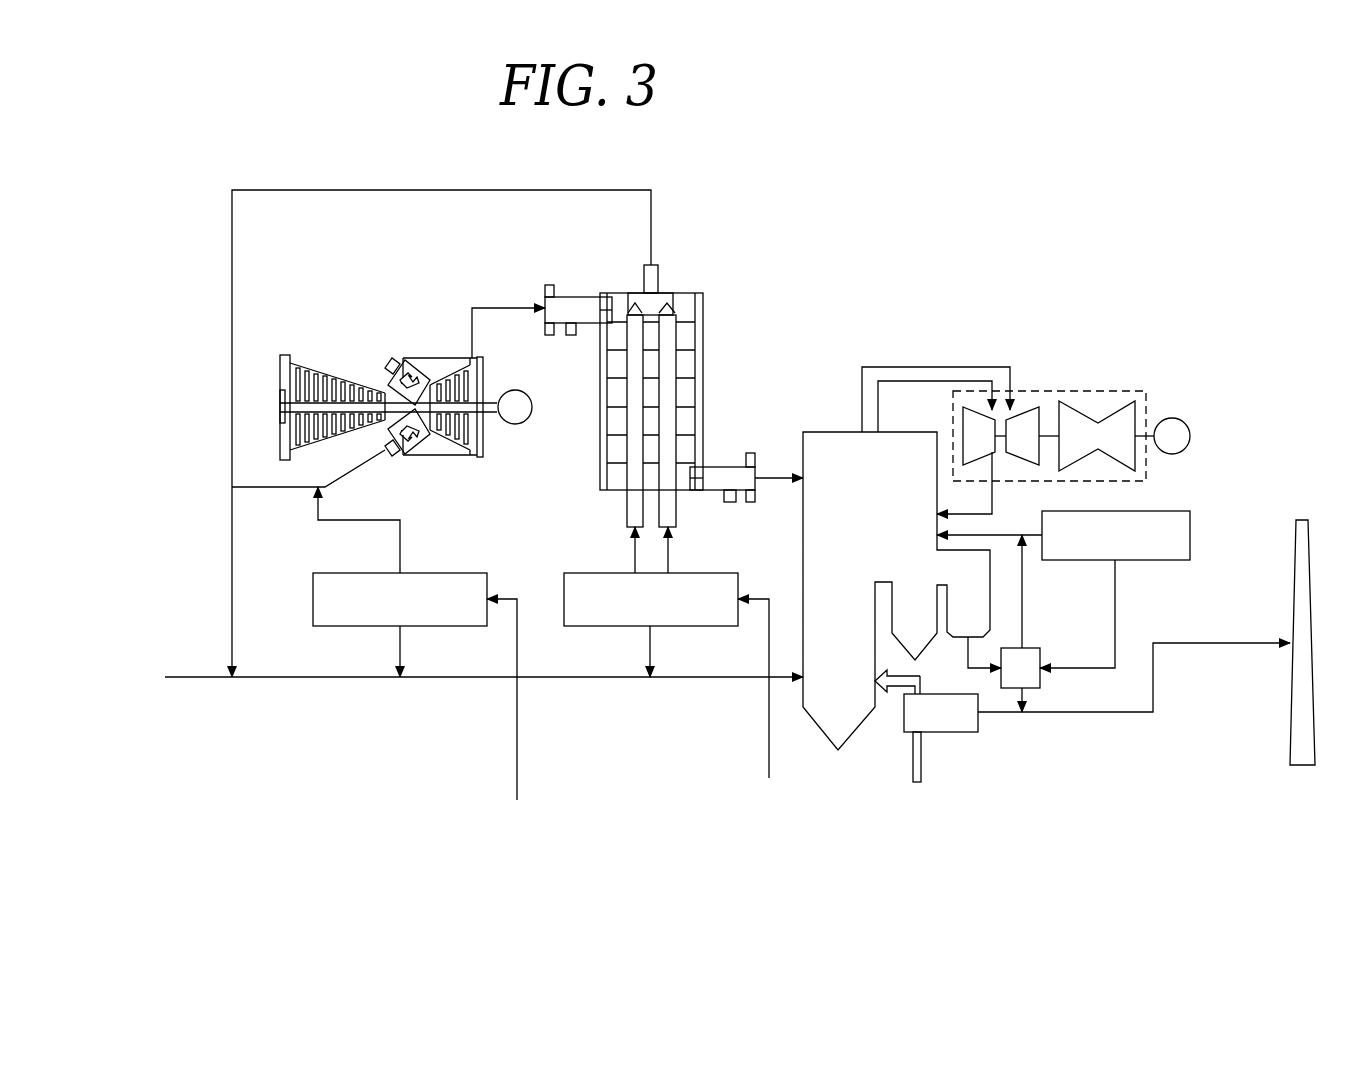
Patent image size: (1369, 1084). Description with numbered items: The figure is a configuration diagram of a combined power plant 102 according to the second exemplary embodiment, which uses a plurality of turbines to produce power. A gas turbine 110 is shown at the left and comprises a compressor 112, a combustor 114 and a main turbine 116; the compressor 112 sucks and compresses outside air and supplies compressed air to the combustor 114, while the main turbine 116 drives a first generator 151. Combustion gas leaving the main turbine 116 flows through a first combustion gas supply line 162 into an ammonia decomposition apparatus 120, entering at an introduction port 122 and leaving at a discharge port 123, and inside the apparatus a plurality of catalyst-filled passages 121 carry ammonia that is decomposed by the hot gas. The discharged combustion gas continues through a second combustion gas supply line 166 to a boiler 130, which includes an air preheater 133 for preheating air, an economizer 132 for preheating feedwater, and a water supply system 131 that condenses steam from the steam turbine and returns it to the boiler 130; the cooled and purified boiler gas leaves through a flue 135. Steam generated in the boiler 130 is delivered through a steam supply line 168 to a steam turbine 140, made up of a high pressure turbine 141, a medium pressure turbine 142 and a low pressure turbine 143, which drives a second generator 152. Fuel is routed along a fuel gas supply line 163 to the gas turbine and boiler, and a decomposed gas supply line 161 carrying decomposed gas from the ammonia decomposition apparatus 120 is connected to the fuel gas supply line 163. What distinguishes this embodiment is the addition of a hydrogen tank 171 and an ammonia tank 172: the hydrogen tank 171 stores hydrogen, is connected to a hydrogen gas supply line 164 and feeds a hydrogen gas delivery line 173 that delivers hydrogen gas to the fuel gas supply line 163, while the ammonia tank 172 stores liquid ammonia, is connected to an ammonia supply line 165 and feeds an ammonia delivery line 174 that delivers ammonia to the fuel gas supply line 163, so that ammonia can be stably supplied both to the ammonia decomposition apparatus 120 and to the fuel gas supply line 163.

The combined power plant 102 is at (960, 141).
The gas turbine 110 is at (386, 338).
The compressor 112 is at (331, 387).
The combustor 114 is at (425, 387).
The main turbine 116 is at (450, 455).
The ammonia decomposition apparatus 120 is at (712, 316).
The passage 121 is at (672, 364).
The introduction port 122 is at (581, 296).
The discharge port 123 is at (725, 467).
The boiler 130 is at (819, 412).
The water supply system 131 is at (1190, 535).
The economizer 132 is at (1036, 648).
The air preheater 133 is at (971, 732).
The flue 135 is at (1290, 722).
The steam turbine 140 is at (1060, 375).
The high pressure turbine 141 is at (982, 406).
The medium pressure turbine 142 is at (1020, 406).
The low pressure turbine 143 is at (1118, 405).
The first generator 151 is at (515, 390).
The second generator 152 is at (1171, 417).
The decomposed gas supply line 161 is at (230, 557).
The first combustion gas supply line 162 is at (497, 307).
The fuel gas supply line 163 is at (323, 679).
The hydrogen gas supply line 164 is at (517, 746).
The ammonia supply line 165 is at (769, 746).
The second combustion gas supply line 166 is at (776, 490).
The steam supply line 168 is at (896, 367).
The hydrogen tank 171 is at (469, 573).
The ammonia tank 172 is at (581, 573).
The hydrogen gas delivery line 173 is at (400, 652).
The ammonia delivery line 174 is at (650, 652).